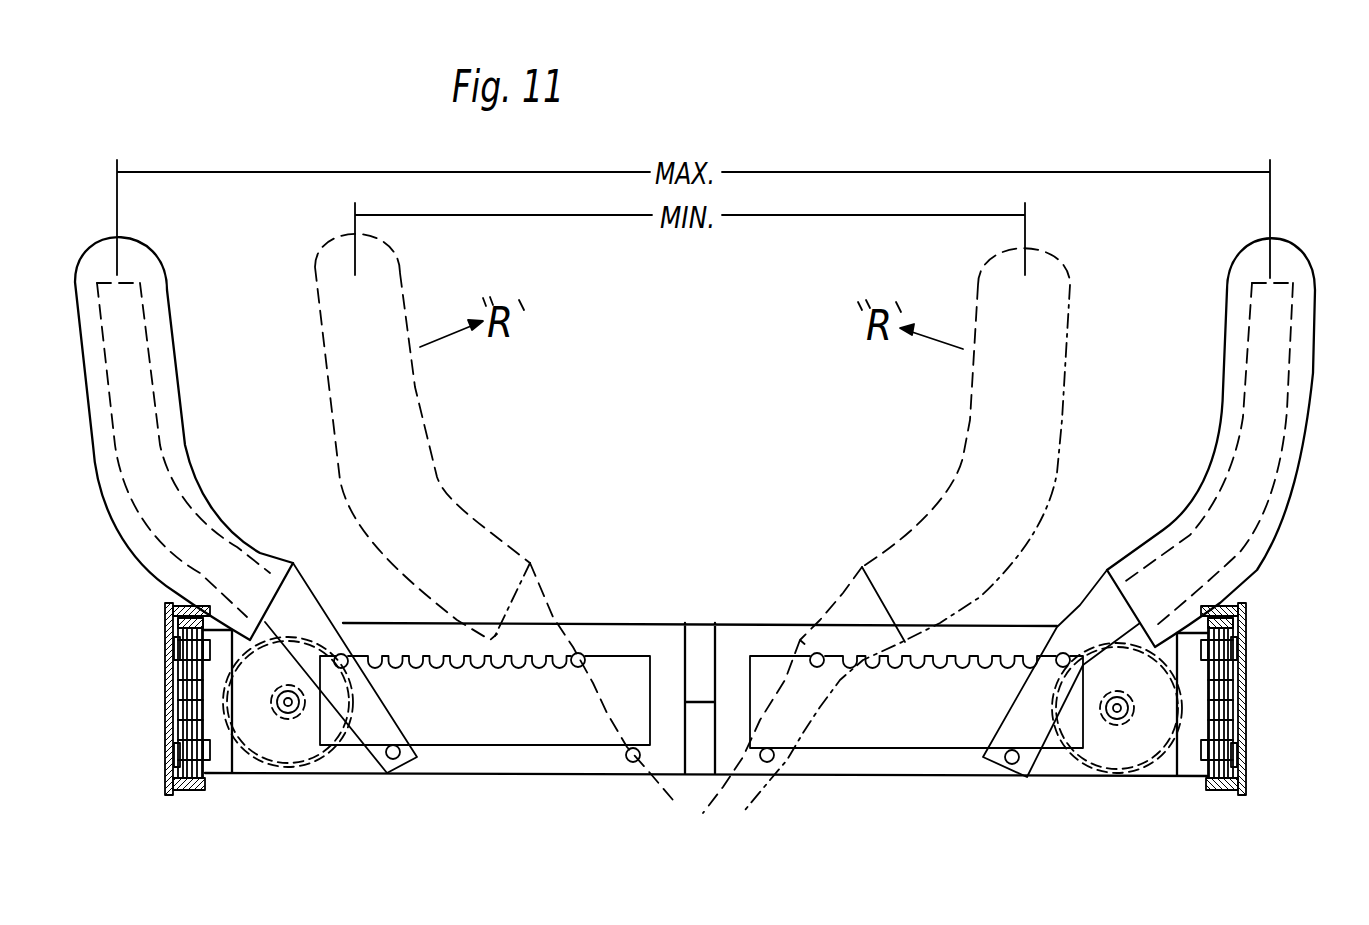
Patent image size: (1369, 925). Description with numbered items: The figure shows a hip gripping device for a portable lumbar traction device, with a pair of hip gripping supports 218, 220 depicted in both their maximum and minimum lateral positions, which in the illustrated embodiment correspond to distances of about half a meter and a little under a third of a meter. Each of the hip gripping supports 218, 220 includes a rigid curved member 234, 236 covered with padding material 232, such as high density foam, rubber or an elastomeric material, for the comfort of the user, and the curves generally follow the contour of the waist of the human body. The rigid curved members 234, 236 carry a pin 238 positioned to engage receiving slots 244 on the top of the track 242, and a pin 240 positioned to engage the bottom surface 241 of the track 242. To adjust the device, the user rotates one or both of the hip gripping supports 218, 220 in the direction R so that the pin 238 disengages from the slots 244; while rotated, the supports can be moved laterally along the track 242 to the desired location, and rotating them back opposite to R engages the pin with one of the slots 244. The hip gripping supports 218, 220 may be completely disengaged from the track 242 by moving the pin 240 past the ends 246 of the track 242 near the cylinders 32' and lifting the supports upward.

The hip gripping support 218 is at (176, 304).
The hip gripping support 220 is at (1297, 252).
The padding material 232 is at (1230, 366).
The rigid curved member 234 is at (183, 447).
The rigid curved member 236 is at (1245, 415).
The pin 238 is at (800, 640).
The pin 240 is at (692, 539).
The bottom surface 241 is at (835, 747).
The track 242 is at (701, 702).
The receiving slots 244 is at (414, 652).
The ends 246 is at (1072, 768).
The cylinders 32' is at (702, 738).